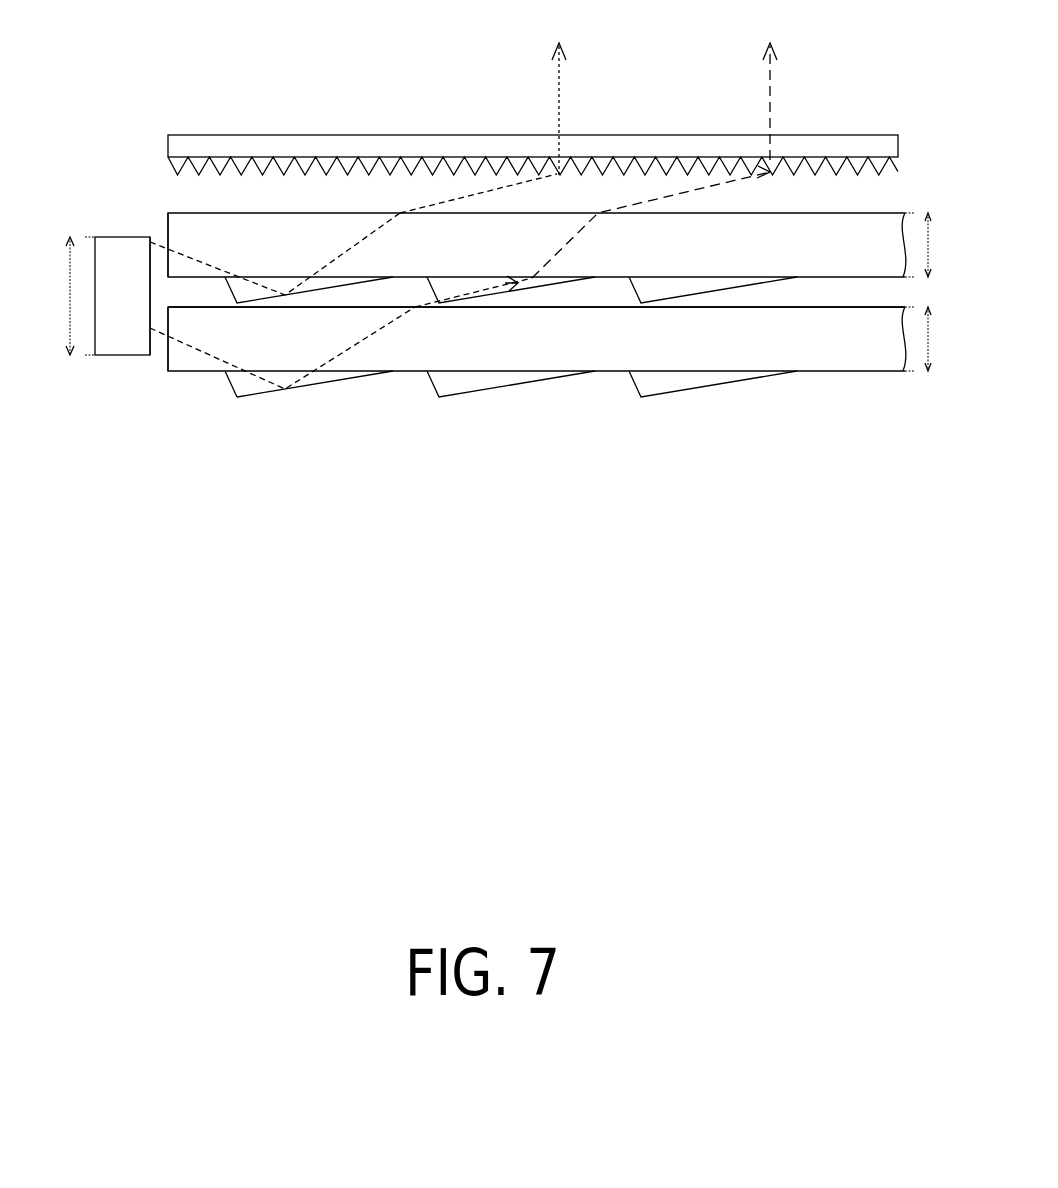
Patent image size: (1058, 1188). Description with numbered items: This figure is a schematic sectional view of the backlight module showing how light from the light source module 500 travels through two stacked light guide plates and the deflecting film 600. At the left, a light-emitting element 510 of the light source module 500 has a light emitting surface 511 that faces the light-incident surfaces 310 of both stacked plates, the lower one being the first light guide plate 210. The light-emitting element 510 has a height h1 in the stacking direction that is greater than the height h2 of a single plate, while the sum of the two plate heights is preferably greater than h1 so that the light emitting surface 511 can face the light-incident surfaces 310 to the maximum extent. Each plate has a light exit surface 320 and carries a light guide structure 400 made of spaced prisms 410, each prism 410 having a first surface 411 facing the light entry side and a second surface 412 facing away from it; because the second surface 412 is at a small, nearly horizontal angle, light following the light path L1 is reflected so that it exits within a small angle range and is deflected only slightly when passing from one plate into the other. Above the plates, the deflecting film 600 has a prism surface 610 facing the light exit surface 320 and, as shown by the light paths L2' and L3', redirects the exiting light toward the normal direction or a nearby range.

The first light guide plate 210 is at (537, 369).
The light-incident surface 310 is at (166, 230).
The light exit surface 320 is at (842, 307).
The light guide structure 400 is at (502, 393).
The prism 410 is at (300, 423).
The first surface 411 is at (227, 388).
The second surface 412 is at (332, 382).
The light source module 500 is at (113, 286).
The light-emitting element 510 is at (126, 309).
The light emitting surface 511 is at (154, 292).
The deflecting film 600 is at (574, 148).
The prism surface 610 is at (890, 168).
The height of light-emitting element h1 is at (69, 296).
The height of light guide plate h2 is at (935, 292).
The light path L1 is at (390, 328).
The light path L2' is at (517, 128).
The light path L3' is at (629, 175).